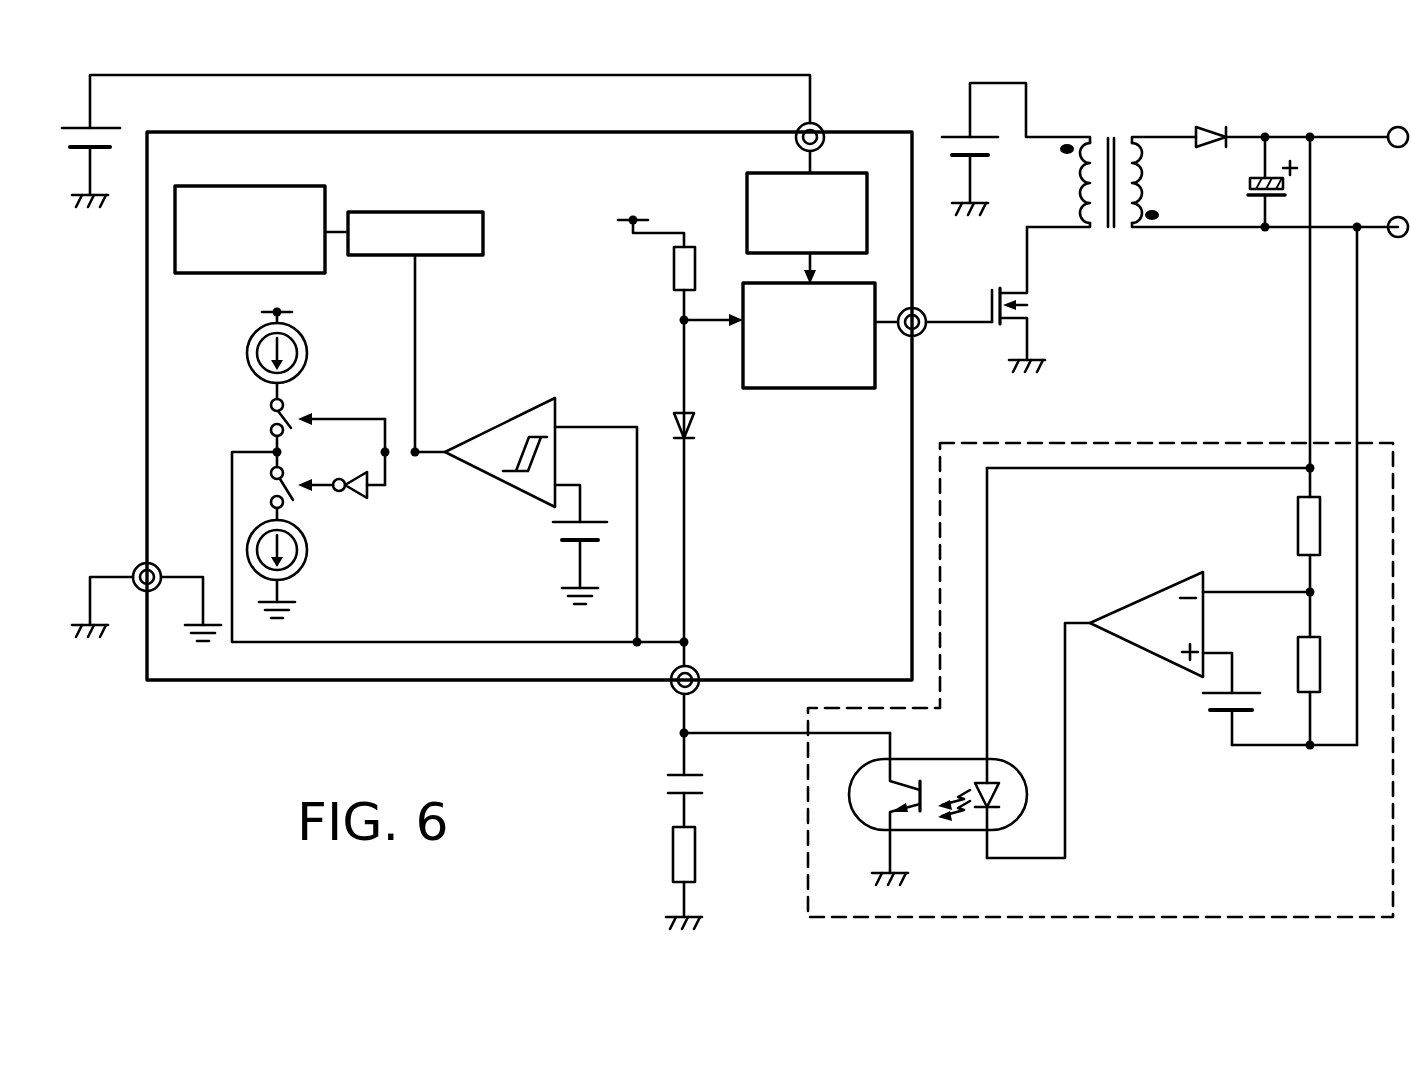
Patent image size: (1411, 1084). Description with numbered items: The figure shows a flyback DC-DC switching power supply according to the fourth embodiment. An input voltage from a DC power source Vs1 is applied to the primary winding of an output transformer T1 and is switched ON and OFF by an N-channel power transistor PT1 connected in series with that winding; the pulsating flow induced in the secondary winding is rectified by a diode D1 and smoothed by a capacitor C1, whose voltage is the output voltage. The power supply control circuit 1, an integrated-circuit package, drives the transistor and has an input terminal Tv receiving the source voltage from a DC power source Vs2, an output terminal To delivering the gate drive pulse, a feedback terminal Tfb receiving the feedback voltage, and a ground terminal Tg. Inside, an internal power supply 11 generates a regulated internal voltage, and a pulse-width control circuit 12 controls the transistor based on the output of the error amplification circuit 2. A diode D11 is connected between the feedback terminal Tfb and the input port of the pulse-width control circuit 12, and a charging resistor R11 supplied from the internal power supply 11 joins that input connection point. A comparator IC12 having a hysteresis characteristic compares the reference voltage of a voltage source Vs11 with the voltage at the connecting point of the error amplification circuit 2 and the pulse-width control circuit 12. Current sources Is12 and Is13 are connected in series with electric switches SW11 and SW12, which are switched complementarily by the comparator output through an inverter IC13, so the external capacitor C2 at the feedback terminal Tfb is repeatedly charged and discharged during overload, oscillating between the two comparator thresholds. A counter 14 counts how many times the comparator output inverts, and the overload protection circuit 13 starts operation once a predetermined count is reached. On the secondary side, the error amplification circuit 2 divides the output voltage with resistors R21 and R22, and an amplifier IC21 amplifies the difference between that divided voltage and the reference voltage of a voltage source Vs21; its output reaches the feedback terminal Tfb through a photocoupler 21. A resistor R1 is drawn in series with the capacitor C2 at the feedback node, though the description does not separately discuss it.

The power supply control circuit 1 is at (485, 131).
The error amplification circuit 2 is at (1093, 443).
The internal power supply 11 is at (848, 173).
The pulse-width control circuit 12 is at (848, 283).
The overload protection circuit 13 is at (240, 186).
The counter 14 is at (423, 210).
The photocoupler 21 is at (905, 759).
The current source Is12 is at (246, 356).
The current source Is13 is at (305, 572).
The electric switch SW11 is at (272, 419).
The electric switch SW12 is at (292, 500).
The comparator having a hysteresis characteristic IC12 is at (518, 410).
The inverter IC13 is at (372, 494).
The diode D11 is at (700, 425).
The charging resistor R11 is at (674, 262).
The voltage source Vs11 is at (560, 534).
The input terminal Tv is at (801, 126).
The output terminal To is at (927, 338).
The ground terminal Tg is at (160, 569).
The feedback terminal Tfb is at (700, 673).
The DC power source Vs1 is at (955, 130).
The DC power source Vs2 is at (436, 141).
The power transistor PT1 is at (1032, 301).
The output transformer T1 is at (1112, 132).
The diode D1 is at (1214, 125).
The capacitor C1 is at (1245, 186).
The resistor R21 is at (1297, 520).
The resistor R22 is at (1297, 652).
The amplifier IC21 is at (1150, 592).
The voltage source Vs21 is at (1208, 702).
The external capacitor C2 is at (705, 784).
The resistor R1 is at (697, 857).